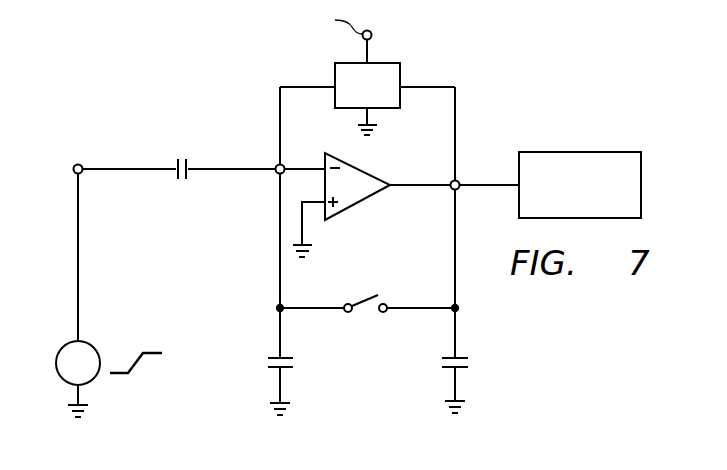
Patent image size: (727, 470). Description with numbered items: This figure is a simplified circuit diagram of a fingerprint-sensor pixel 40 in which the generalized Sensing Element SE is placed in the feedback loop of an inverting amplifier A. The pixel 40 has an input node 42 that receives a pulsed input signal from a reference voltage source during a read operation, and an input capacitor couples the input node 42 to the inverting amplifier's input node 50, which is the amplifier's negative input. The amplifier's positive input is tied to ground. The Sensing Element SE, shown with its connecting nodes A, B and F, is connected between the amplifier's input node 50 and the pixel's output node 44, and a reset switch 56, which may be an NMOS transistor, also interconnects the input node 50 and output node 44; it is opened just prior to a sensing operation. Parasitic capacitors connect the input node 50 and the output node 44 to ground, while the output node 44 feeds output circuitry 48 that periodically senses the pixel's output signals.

The pixel 40 is at (103, 113).
The input node 42 is at (74, 166).
The output node 44 is at (459, 181).
The output circuitry 48 is at (580, 151).
The amplifier input node 50 is at (276, 173).
The reset switch 56 is at (368, 298).